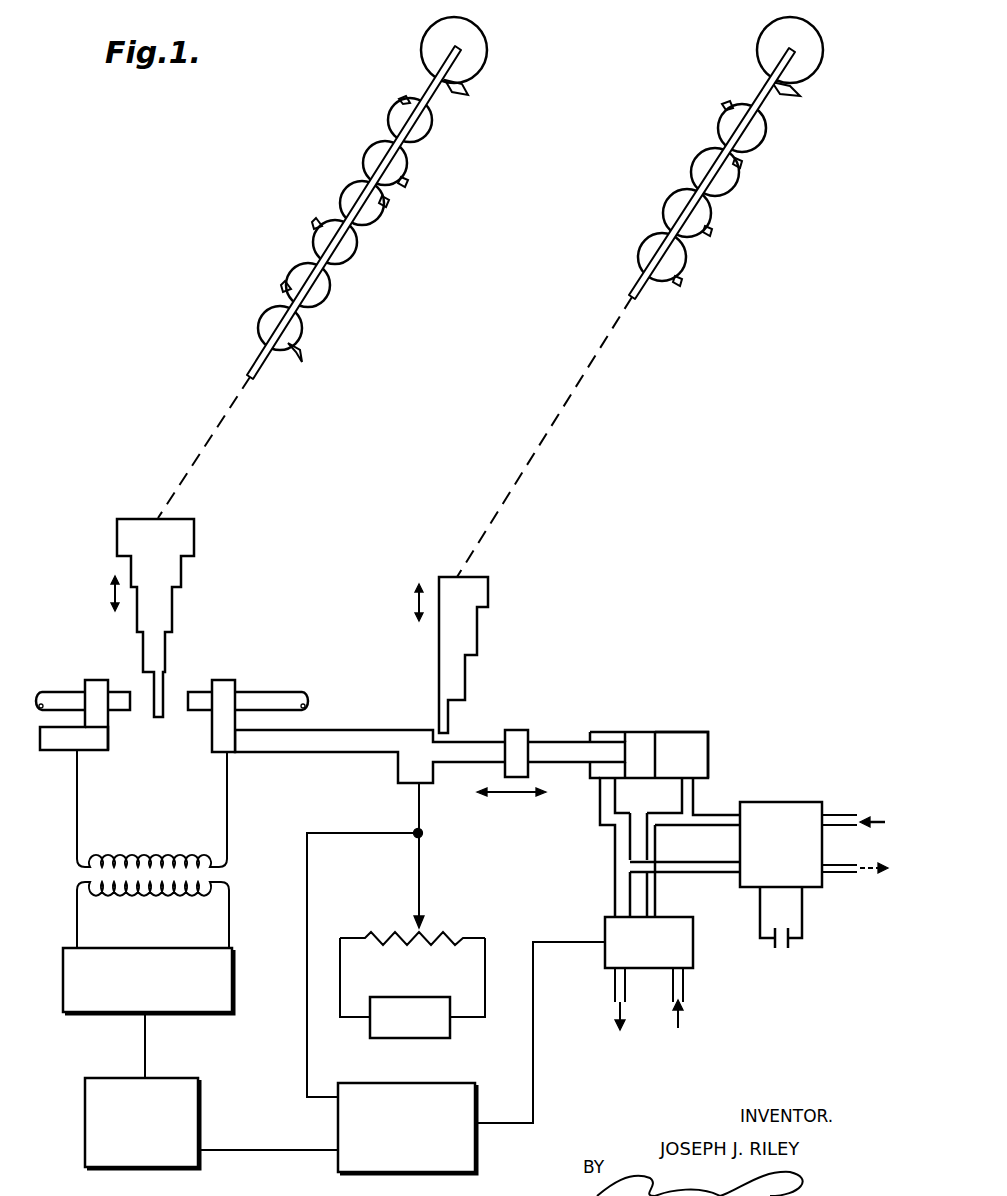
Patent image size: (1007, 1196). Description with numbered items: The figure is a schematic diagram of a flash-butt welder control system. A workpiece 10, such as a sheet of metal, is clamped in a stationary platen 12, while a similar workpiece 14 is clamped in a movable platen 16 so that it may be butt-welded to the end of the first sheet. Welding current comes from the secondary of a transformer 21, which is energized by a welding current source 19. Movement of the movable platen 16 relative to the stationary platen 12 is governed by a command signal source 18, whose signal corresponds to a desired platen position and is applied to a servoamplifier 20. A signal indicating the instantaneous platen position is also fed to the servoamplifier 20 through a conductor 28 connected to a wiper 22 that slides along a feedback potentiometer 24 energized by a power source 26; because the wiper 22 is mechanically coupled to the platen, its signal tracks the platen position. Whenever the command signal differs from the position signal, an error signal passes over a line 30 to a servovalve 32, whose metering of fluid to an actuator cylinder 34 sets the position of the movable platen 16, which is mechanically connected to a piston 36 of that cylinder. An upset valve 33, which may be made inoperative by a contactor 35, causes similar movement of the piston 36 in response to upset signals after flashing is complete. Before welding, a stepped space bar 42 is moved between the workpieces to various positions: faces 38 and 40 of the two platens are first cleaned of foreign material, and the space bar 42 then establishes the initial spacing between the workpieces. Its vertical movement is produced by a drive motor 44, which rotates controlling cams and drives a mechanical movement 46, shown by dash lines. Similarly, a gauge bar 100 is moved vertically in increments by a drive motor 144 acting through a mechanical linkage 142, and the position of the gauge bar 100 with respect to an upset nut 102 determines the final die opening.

The workpiece 10 is at (62, 690).
The stationary platen 12 is at (58, 742).
The workpiece 14 is at (202, 695).
The movable platen 16 is at (285, 750).
The command signal source 18 is at (85, 1137).
The welding current source 19 is at (63, 985).
The servoamplifier 20 is at (400, 1173).
The transformer 21 is at (85, 872).
The wiper 22 is at (422, 884).
The feedback potentiometer 24 is at (415, 936).
The power source 26 is at (433, 1040).
The conductor 28 is at (303, 1047).
The line 30 is at (535, 1073).
The servovalve 32 is at (695, 953).
The upset valve 33 is at (793, 802).
The actuator cylinder 34 is at (707, 750).
The contactor 35 is at (783, 950).
The piston 36 is at (642, 735).
The face 38 is at (107, 738).
The face 40 is at (215, 738).
The space bar 42 is at (117, 532).
The drive motor 44 is at (470, 35).
The mechanical movement 46 is at (215, 412).
The gauge bar 100 is at (439, 648).
The upset nut 102 is at (522, 733).
The mechanical linkage 142 is at (545, 418).
The drive motor 144 is at (762, 35).